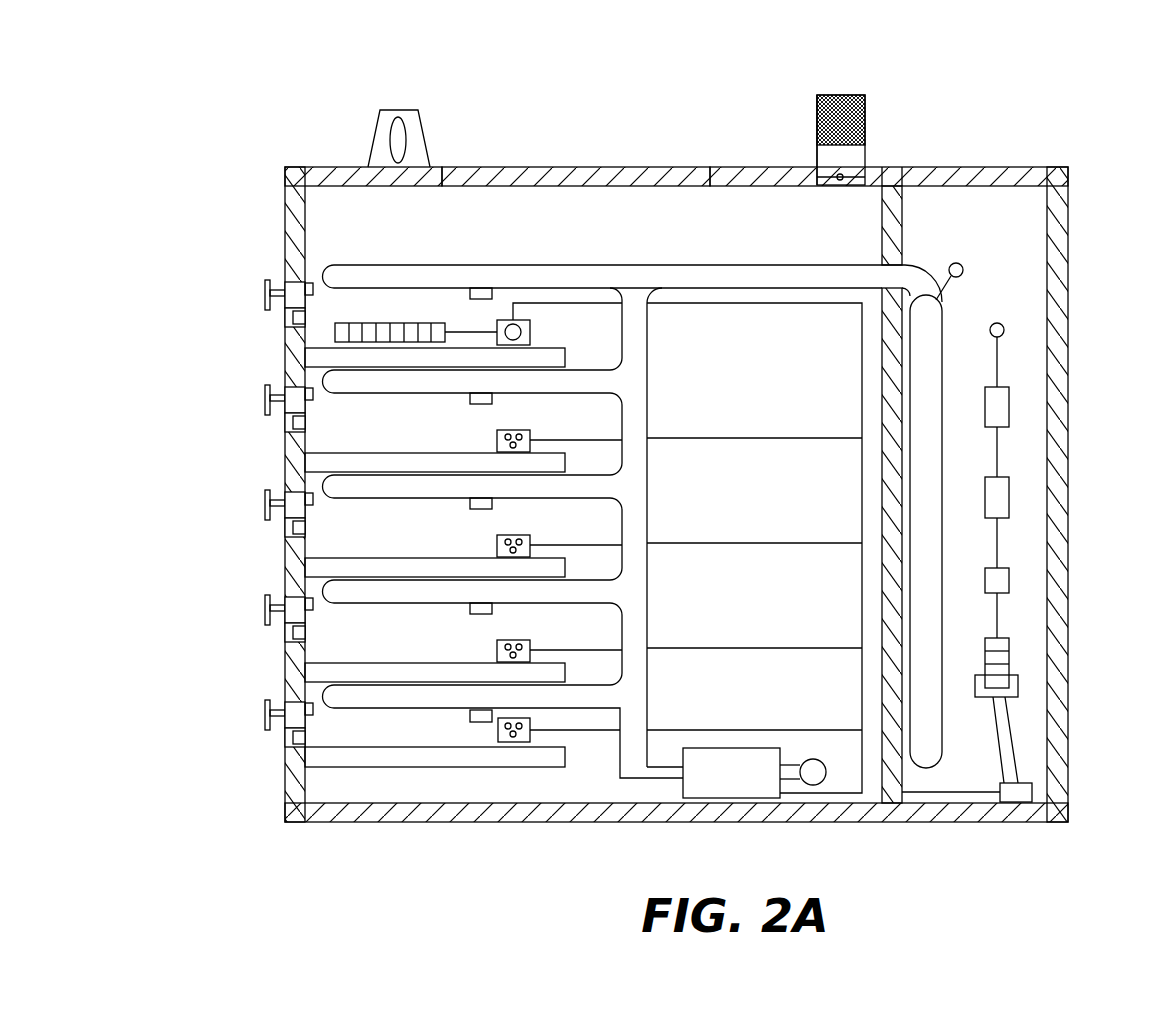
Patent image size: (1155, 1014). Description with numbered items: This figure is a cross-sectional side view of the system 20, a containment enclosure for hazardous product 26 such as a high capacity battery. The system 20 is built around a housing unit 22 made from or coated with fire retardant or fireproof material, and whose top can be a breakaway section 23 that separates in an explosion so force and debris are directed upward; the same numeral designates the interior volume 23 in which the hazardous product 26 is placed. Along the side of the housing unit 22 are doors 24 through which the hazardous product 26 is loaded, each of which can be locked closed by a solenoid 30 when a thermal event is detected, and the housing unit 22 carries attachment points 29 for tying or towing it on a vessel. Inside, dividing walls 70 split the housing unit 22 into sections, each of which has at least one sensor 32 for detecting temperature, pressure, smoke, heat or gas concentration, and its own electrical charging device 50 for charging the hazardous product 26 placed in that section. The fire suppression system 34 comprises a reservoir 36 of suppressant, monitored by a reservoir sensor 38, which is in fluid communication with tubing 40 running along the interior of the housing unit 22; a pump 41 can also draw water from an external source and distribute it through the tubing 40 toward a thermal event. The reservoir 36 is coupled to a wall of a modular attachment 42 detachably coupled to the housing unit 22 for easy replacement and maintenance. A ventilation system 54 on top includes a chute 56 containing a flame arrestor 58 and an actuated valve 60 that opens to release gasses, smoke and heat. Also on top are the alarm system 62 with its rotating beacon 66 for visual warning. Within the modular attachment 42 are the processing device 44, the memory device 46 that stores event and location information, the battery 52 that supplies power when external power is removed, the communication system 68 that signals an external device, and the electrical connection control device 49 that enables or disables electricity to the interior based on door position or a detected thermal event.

The system 20 is at (236, 168).
The housing unit 22 is at (330, 166).
The interior volume 23 is at (476, 166).
The door 24 is at (264, 293).
The hazardous product 26 is at (375, 322).
The attachment point 29 is at (315, 290).
The solenoid 30 is at (285, 320).
The sensor 32 is at (470, 293).
The fire suppression system 34 is at (949, 306).
The reservoir 36 is at (945, 368).
The reservoir sensor 38 is at (958, 262).
The tubing 40 is at (622, 265).
The pump 41 is at (743, 798).
The modular attachment 42 is at (1028, 163).
The processing device 44 is at (1009, 497).
The memory device 46 is at (1009, 580).
The electrical connection control device 49 is at (1032, 792).
The electrical charging device 50 is at (497, 441).
The battery 52 is at (1009, 655).
The ventilation system 54 is at (872, 125).
The chute 56 is at (817, 125).
The flame arrestor 58 is at (843, 95).
The actuated valve 60 is at (822, 177).
The alarm system 62 is at (380, 112).
The rotating beacon 66 is at (418, 112).
The communication system 68 is at (1009, 407).
The dividing wall 70 is at (565, 358).